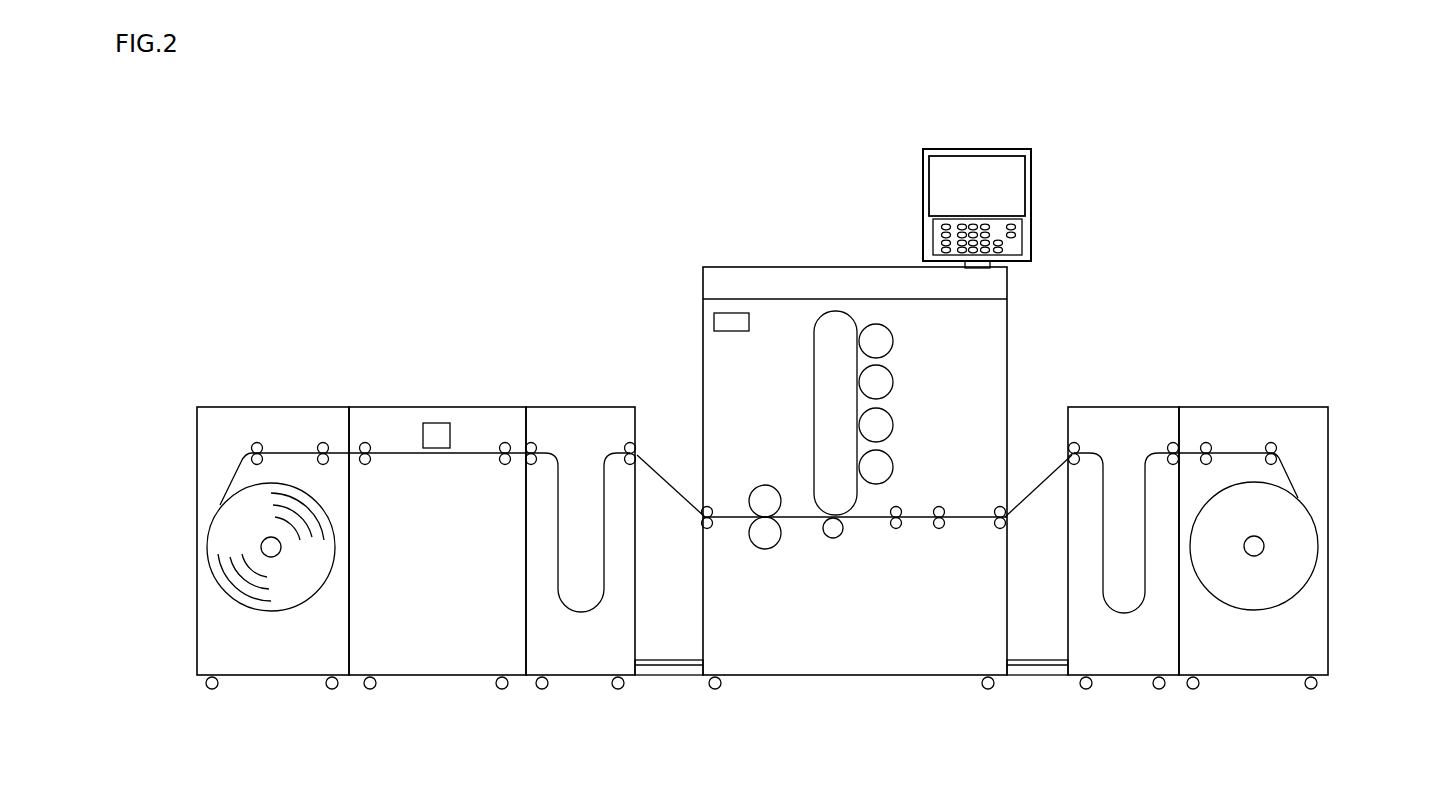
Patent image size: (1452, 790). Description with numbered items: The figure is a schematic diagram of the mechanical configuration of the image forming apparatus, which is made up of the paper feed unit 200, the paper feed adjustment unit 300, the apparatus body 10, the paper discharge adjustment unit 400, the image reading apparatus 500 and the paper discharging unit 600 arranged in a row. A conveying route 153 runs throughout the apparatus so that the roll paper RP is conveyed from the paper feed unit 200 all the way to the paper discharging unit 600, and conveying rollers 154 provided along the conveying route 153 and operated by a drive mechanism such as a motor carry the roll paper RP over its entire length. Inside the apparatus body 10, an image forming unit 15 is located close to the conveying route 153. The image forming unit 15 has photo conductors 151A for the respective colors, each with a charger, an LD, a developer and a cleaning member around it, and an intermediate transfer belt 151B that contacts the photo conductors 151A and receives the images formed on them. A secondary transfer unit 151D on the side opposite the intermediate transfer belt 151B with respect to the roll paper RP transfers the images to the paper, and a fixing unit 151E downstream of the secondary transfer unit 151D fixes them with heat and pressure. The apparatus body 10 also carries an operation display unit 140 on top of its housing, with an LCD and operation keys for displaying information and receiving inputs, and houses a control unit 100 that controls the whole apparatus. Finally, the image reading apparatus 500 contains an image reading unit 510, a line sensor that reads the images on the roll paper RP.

The apparatus body 10 is at (766, 414).
The control unit 100 is at (704, 300).
The operation display unit 140 is at (961, 167).
The image forming unit 15 is at (911, 396).
The photo conductors 151A is at (893, 382).
The intermediate transfer belt 151B is at (813, 353).
The secondary transfer unit 151D is at (836, 522).
The fixing unit 151E is at (706, 453).
The conveying route 153 is at (967, 517).
The conveying rollers 154 is at (896, 527).
The paper feed unit 200 is at (1314, 475).
The paper feed adjustment unit 300 is at (1158, 506).
The paper discharge adjustment unit 400 is at (517, 455).
The image reading apparatus 500 is at (430, 490).
The image reading unit 510 is at (452, 433).
The paper discharging unit 600 is at (216, 455).
The roll paper RP is at (1040, 482).